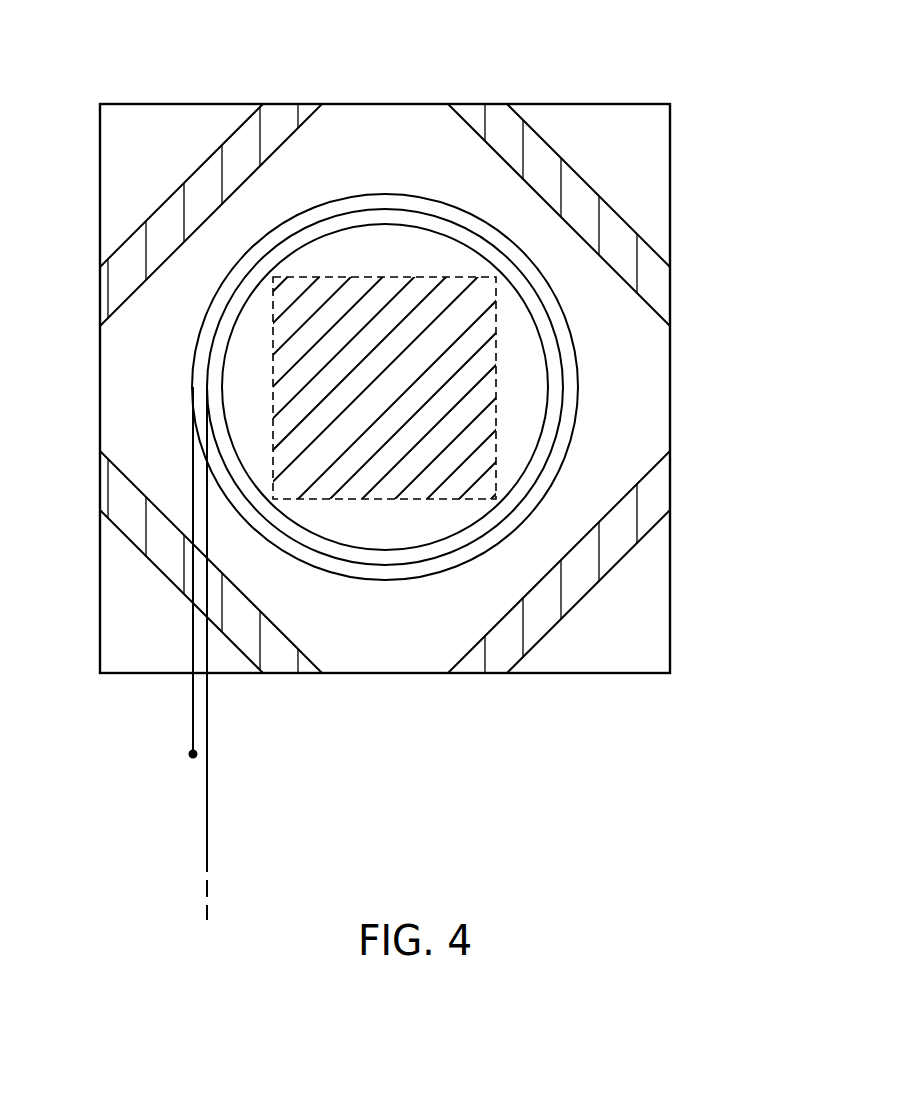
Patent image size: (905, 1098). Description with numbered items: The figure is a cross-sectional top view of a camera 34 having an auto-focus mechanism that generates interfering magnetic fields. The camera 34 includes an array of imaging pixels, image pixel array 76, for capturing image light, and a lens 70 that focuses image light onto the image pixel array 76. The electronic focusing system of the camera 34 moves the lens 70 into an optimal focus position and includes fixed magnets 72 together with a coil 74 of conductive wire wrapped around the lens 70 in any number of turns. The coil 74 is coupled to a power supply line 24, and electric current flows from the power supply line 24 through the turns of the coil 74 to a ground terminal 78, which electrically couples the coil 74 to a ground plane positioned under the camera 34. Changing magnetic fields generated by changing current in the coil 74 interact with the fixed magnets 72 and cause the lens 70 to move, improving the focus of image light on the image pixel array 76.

The camera 34 is at (559, 62).
The fixed magnets 72 is at (233, 157).
The coil 74 is at (388, 176).
The lens 70 is at (527, 375).
The image pixel array 76 is at (407, 500).
The ground terminal 78 is at (190, 752).
The power supply line 24 is at (208, 792).